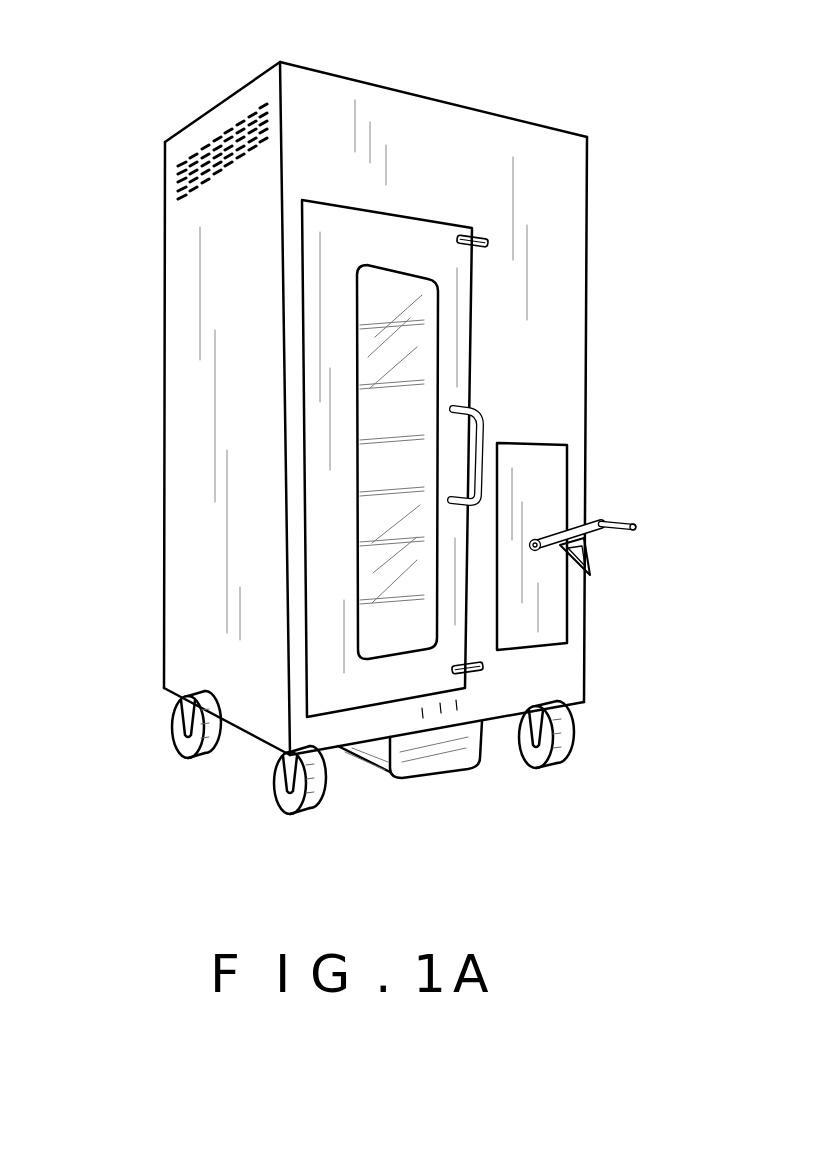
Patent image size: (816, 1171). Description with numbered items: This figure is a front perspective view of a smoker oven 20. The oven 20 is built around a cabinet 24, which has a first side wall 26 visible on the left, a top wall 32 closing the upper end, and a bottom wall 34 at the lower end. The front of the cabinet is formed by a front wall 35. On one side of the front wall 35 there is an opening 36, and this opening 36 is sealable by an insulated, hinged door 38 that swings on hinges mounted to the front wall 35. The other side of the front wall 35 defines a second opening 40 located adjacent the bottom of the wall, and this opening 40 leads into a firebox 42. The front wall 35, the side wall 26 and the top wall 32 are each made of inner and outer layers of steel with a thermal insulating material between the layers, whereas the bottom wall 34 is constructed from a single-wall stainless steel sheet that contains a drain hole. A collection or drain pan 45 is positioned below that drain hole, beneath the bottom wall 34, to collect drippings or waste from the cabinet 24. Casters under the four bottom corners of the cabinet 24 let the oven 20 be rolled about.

The oven 20 is at (120, 230).
The top wall 32 is at (343, 73).
The cabinet 24 is at (191, 378).
The first side wall 26 is at (197, 555).
The front wall 35 is at (542, 312).
The opening 36 is at (418, 219).
The insulated, hinged door 38 is at (333, 650).
The firebox 42 is at (538, 482).
The opening 40 is at (550, 602).
The collection or drain pan 45 is at (437, 758).
The bottom wall 34 is at (368, 737).